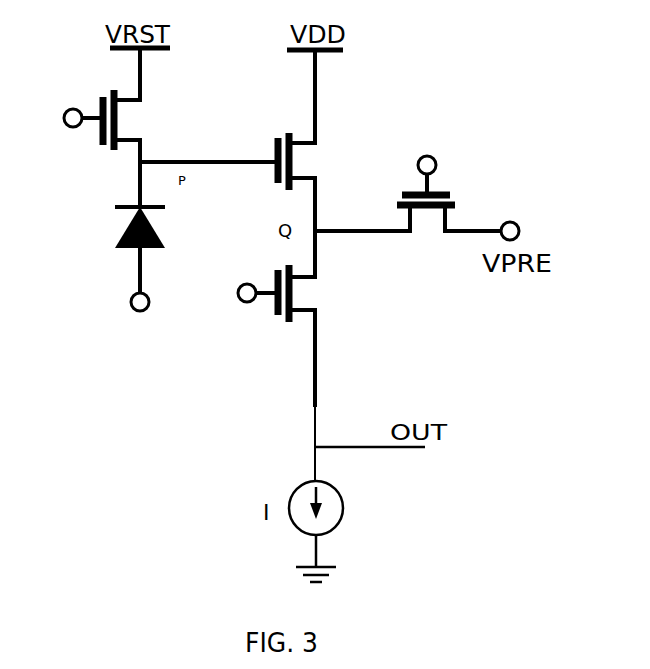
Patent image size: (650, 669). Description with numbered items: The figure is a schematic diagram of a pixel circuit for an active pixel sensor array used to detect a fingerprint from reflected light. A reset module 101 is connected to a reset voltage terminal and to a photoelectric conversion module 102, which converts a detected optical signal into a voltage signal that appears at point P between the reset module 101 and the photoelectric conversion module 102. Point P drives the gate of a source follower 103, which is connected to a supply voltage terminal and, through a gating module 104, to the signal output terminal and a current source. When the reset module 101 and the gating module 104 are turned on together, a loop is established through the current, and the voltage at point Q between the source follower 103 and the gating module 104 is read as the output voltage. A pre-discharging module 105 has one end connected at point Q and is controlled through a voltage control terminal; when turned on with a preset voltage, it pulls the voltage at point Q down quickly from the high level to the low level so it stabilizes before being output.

The reset module 101 is at (98, 151).
The photoelectric conversion module 102 is at (110, 240).
The source follower 103 is at (272, 175).
The gating module 104 is at (275, 313).
The pre-discharging module 105 is at (457, 200).